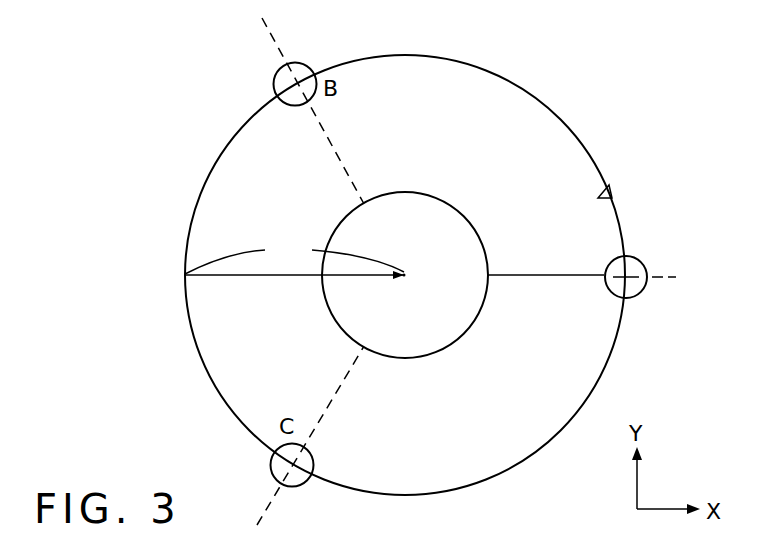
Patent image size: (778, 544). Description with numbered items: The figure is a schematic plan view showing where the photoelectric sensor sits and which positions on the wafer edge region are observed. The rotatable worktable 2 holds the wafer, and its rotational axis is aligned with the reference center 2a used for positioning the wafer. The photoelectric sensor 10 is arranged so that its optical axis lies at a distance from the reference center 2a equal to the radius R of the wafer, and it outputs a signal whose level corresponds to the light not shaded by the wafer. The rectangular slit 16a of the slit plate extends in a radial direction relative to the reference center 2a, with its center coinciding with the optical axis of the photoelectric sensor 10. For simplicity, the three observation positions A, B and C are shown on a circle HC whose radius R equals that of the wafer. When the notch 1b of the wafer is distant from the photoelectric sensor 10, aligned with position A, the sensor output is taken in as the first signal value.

The circle HC is at (450, 60).
The rotatable worktable 2 is at (450, 222).
The reference center 2a is at (408, 275).
The radius R is at (294, 259).
The notch 1b is at (613, 190).
The photoelectric sensor 10 is at (641, 259).
The slit 16a is at (628, 277).